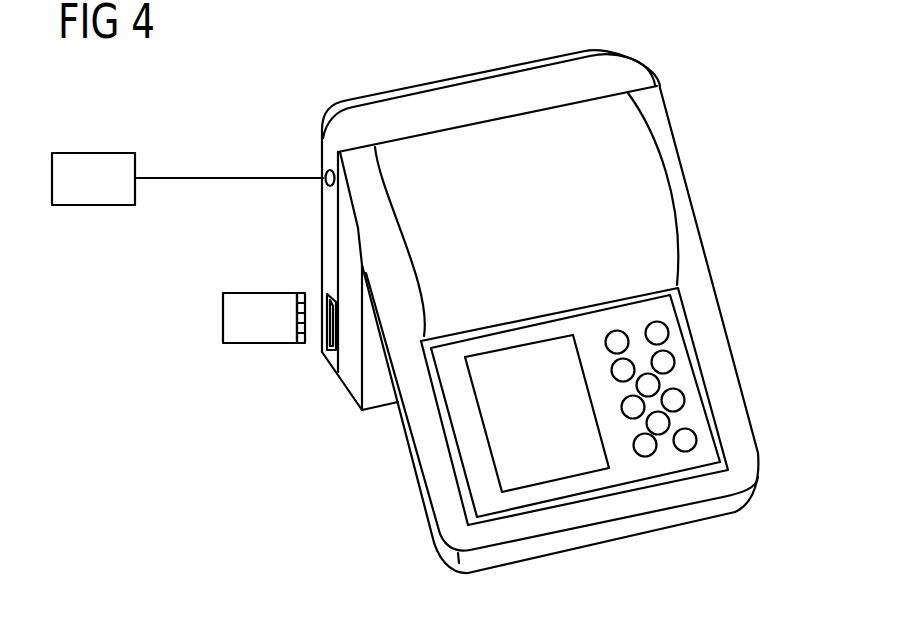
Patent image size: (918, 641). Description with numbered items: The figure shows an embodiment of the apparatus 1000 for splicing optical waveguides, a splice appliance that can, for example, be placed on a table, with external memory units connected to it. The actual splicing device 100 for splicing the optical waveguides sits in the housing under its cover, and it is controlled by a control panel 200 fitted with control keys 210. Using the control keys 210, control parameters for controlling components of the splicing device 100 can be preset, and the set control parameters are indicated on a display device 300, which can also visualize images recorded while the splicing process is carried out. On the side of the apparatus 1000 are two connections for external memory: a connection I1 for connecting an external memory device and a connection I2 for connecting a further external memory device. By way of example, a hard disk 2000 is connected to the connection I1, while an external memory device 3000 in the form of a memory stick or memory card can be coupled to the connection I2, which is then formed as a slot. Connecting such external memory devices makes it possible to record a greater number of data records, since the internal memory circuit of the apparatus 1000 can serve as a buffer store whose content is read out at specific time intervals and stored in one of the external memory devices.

The splicing device 100 is at (650, 183).
The control panel 200 is at (683, 373).
The control keys 210 is at (692, 440).
The display device 300 is at (503, 422).
The apparatus for splicing optical waveguides 1000 is at (288, 142).
The hard disk 2000 is at (95, 152).
The external memory device 3000 is at (223, 318).
The connection I1 is at (323, 184).
The connection I2 is at (325, 338).